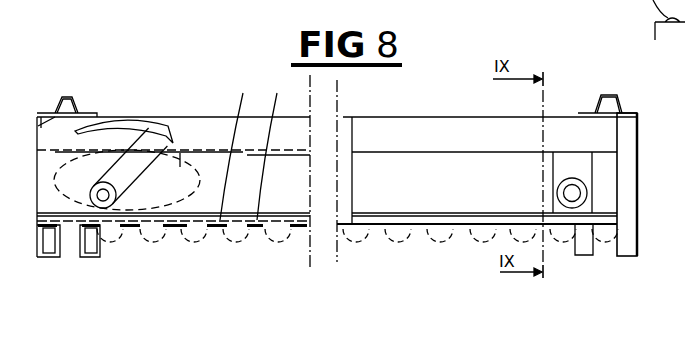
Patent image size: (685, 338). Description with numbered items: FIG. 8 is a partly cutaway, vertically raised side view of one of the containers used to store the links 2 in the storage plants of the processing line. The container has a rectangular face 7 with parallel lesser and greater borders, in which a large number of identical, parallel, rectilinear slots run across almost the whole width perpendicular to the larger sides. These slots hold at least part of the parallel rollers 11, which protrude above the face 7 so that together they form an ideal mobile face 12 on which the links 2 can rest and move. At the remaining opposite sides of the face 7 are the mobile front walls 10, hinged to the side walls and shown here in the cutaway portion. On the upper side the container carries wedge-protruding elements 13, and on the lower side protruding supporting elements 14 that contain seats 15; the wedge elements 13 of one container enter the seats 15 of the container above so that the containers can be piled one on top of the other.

The links 2 is at (181, 147).
The rectangular face 7 is at (272, 147).
The mobile front walls 10 is at (115, 120).
The parallel rollers 11 is at (182, 255).
The ideal mobile face 12 is at (240, 147).
The wedge-protruding elements 13 is at (58, 107).
The supporting elements 14 is at (80, 257).
The seats 15 is at (613, 248).